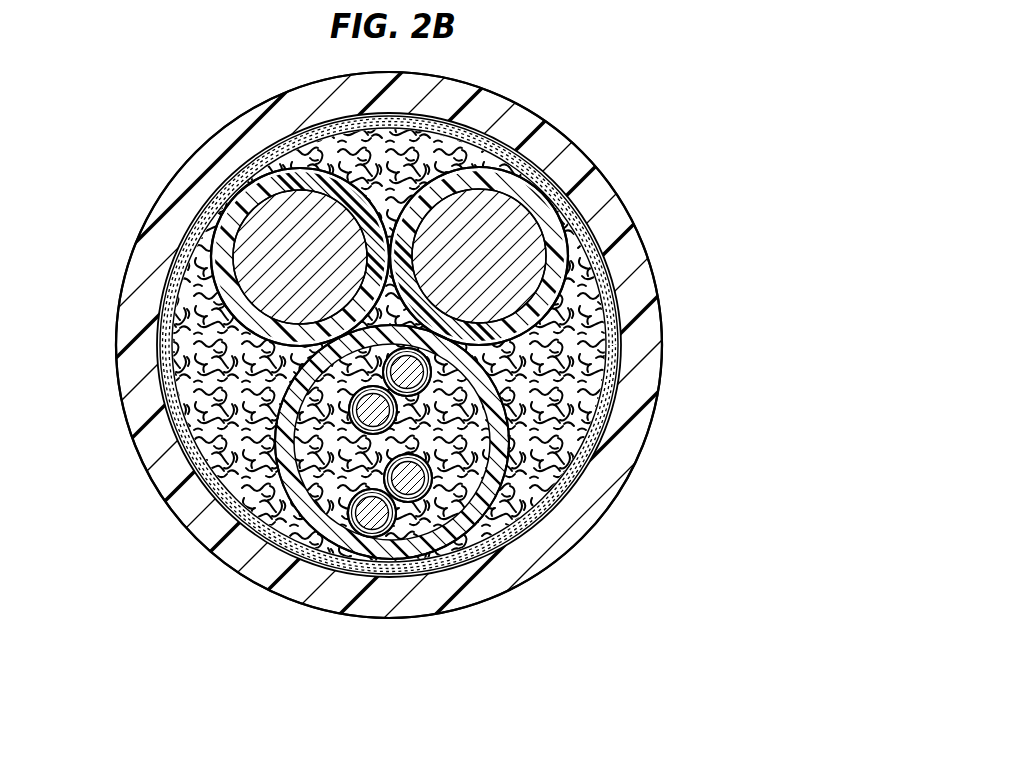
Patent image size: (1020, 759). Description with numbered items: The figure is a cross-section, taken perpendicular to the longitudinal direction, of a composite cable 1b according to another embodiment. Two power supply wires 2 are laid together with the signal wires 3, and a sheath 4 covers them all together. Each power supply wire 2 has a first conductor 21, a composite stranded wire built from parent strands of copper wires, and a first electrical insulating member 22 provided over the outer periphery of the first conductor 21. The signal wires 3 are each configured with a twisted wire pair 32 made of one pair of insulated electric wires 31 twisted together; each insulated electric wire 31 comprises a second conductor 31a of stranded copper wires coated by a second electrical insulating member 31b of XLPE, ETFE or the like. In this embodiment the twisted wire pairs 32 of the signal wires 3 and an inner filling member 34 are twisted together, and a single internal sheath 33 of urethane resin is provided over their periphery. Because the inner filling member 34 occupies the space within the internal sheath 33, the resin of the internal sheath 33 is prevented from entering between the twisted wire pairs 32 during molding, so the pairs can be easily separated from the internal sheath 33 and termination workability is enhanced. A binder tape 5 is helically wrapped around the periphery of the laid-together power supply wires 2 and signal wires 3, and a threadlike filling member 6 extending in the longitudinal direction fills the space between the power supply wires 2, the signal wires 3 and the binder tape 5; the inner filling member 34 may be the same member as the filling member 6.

The composite cable 1b is at (205, 93).
The power supply wire 2 is at (184, 264).
The first conductor 21 is at (514, 234).
The first electrical insulating member 22 is at (547, 221).
The signal wire 3 is at (466, 371).
The insulated electric wire 31 is at (735, 356).
The second conductor 31a is at (414, 371).
The second electrical insulating member 31b is at (428, 388).
The twisted wire pair 32 is at (494, 458).
The internal sheath 33 is at (489, 477).
The inner filling member 34 is at (506, 474).
The sheath 4 is at (541, 557).
The binder tape 5 is at (463, 565).
The filling member 6 is at (238, 500).